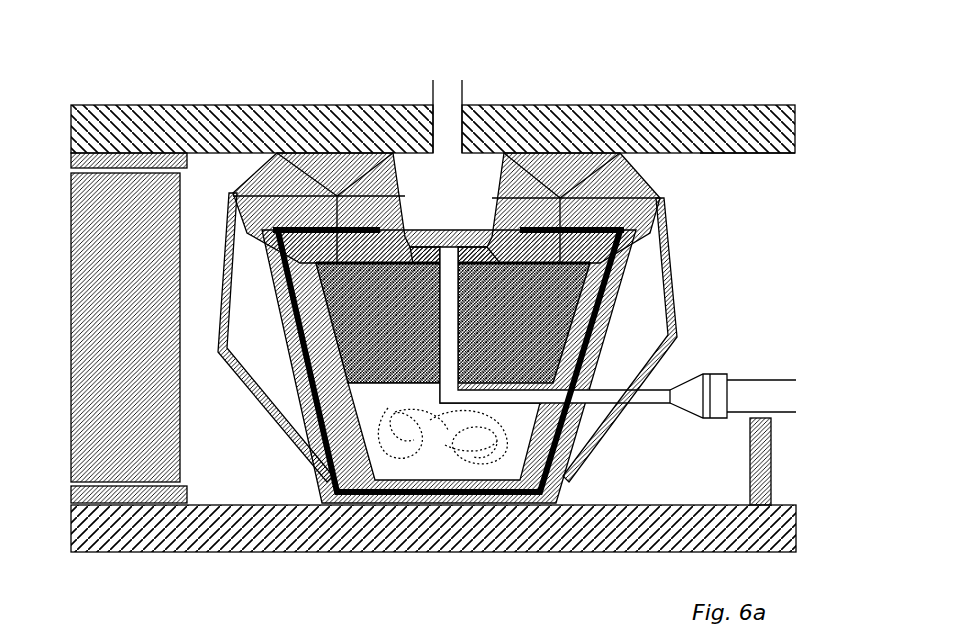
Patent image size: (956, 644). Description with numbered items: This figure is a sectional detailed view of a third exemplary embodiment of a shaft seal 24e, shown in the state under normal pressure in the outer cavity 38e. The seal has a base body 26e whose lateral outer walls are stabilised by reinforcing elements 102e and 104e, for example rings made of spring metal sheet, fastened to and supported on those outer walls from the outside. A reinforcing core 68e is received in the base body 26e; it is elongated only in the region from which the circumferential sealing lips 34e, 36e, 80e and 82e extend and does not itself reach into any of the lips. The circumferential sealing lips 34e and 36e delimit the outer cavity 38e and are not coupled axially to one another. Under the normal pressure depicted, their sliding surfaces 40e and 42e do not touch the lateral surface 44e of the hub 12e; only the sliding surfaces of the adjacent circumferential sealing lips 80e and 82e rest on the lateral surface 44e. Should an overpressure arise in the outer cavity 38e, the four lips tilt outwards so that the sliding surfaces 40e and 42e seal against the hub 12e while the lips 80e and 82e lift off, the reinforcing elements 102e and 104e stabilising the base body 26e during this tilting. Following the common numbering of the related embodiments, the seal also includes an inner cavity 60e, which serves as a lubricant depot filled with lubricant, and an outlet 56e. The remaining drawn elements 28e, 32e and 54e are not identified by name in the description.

The hub 12e is at (130, 118).
The circumferential sealing lip 80e is at (672, 108).
The lateral surface 44e is at (782, 163).
The circumferential sealing lip 82e is at (213, 108).
The base plate 28e is at (450, 507).
The inner cavity 60e is at (576, 473).
The circumferential sealing lip 36e is at (297, 103).
The wedge partition lines 32e is at (412, 215).
The sliding surface 42e is at (420, 236).
The sliding surface 40e is at (503, 170).
The circumferential sealing lip 34e is at (562, 153).
The outer cavity 38e is at (465, 214).
The shaft seal 24e is at (700, 237).
The outlet 56e is at (457, 236).
The base body 26e is at (627, 291).
The reinforcing element 104e is at (262, 412).
The reinforcing element 102e is at (672, 325).
The outlet tube and nozzle 54e is at (601, 407).
The reinforcing core 68e is at (503, 460).